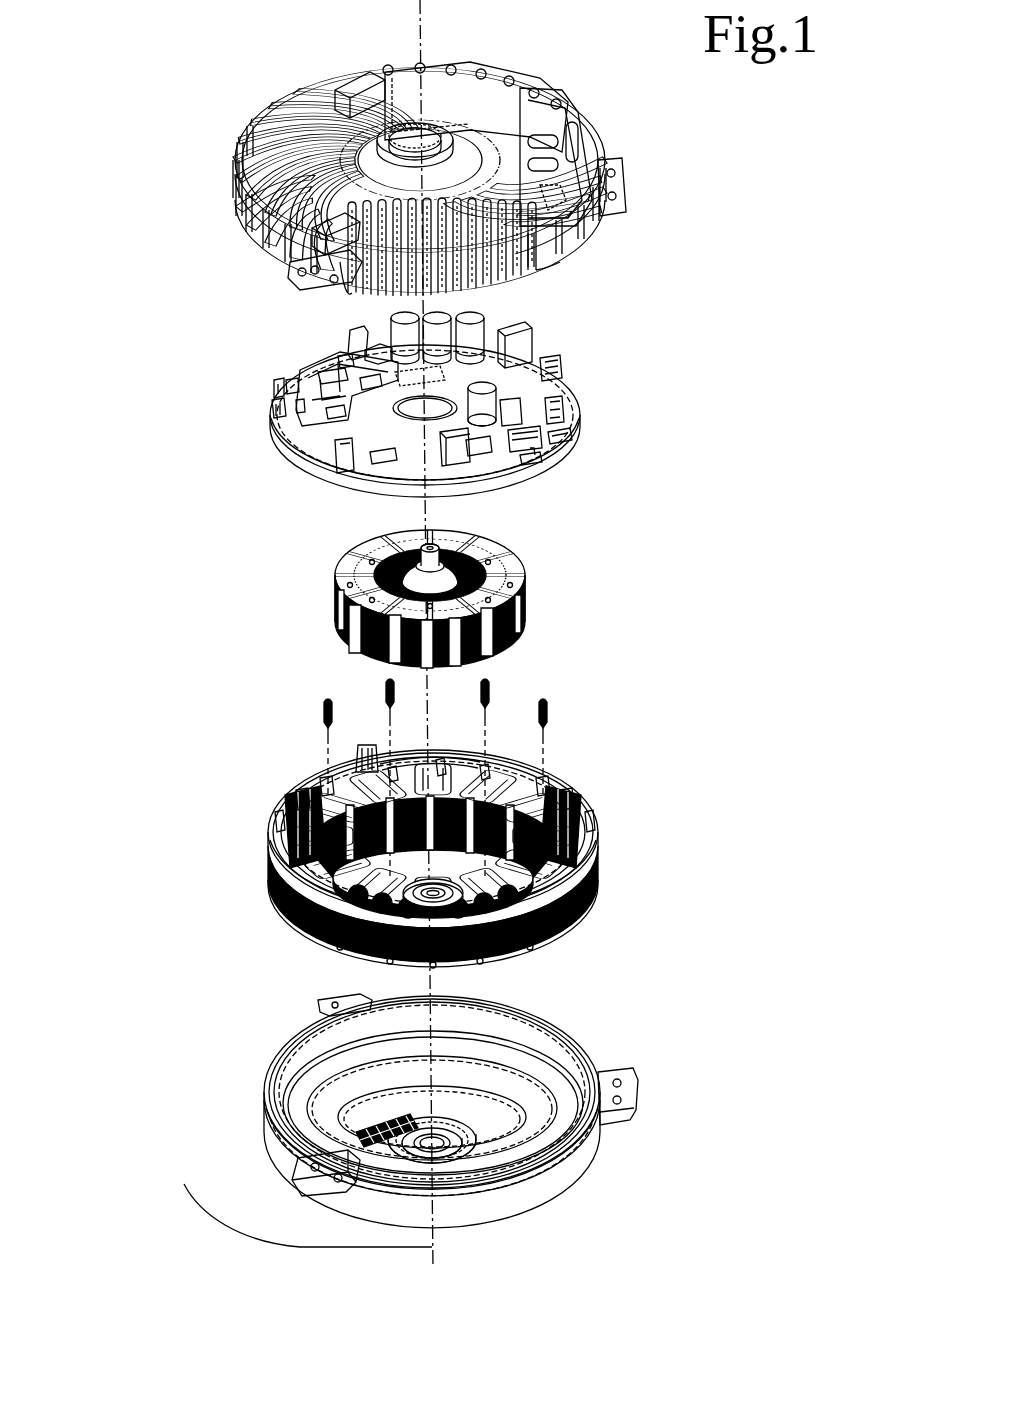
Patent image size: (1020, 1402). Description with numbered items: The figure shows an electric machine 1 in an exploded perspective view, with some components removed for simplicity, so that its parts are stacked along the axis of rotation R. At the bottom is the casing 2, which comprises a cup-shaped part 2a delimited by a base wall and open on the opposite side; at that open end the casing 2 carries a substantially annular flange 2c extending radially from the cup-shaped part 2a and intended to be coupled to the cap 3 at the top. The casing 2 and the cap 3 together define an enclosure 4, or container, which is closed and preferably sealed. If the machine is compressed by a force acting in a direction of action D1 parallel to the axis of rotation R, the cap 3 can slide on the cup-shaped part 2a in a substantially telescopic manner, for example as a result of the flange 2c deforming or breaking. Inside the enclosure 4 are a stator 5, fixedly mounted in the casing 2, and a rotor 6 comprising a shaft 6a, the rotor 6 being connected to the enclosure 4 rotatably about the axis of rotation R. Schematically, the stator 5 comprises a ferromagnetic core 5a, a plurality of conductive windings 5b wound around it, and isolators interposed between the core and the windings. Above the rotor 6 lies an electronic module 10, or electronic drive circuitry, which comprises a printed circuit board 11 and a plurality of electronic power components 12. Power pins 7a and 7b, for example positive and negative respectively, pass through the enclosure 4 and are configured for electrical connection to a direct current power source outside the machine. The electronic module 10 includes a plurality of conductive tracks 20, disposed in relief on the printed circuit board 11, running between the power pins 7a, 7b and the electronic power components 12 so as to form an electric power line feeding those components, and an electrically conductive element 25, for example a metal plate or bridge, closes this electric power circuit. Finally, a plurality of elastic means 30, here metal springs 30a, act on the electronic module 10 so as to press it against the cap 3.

The electric machine 1 is at (143, 522).
The casing 2 is at (660, 1047).
The cup-shaped part 2a is at (548, 1180).
The annular flange 2c is at (602, 1078).
The cap 3 is at (668, 160).
The enclosure 4 is at (492, 648).
The stator 5 is at (630, 865).
The ferromagnetic core 5a is at (590, 840).
The conductive windings 5b is at (565, 800).
The rotor 6 is at (325, 528).
The shaft 6a is at (418, 568).
The power pin 7a is at (575, 410).
The power pin 7b is at (560, 372).
The electronic module 10 is at (632, 390).
The printed circuit board 11 is at (580, 432).
The electronic power components 12 is at (320, 364).
The conductive tracks 20 is at (278, 420).
The electrically conductive element 25 is at (540, 458).
The elastic means 30 is at (580, 697).
The metal springs 30a is at (387, 682).
The direction of action D1 is at (420, 42).
The axis of rotation R is at (304, 1204).